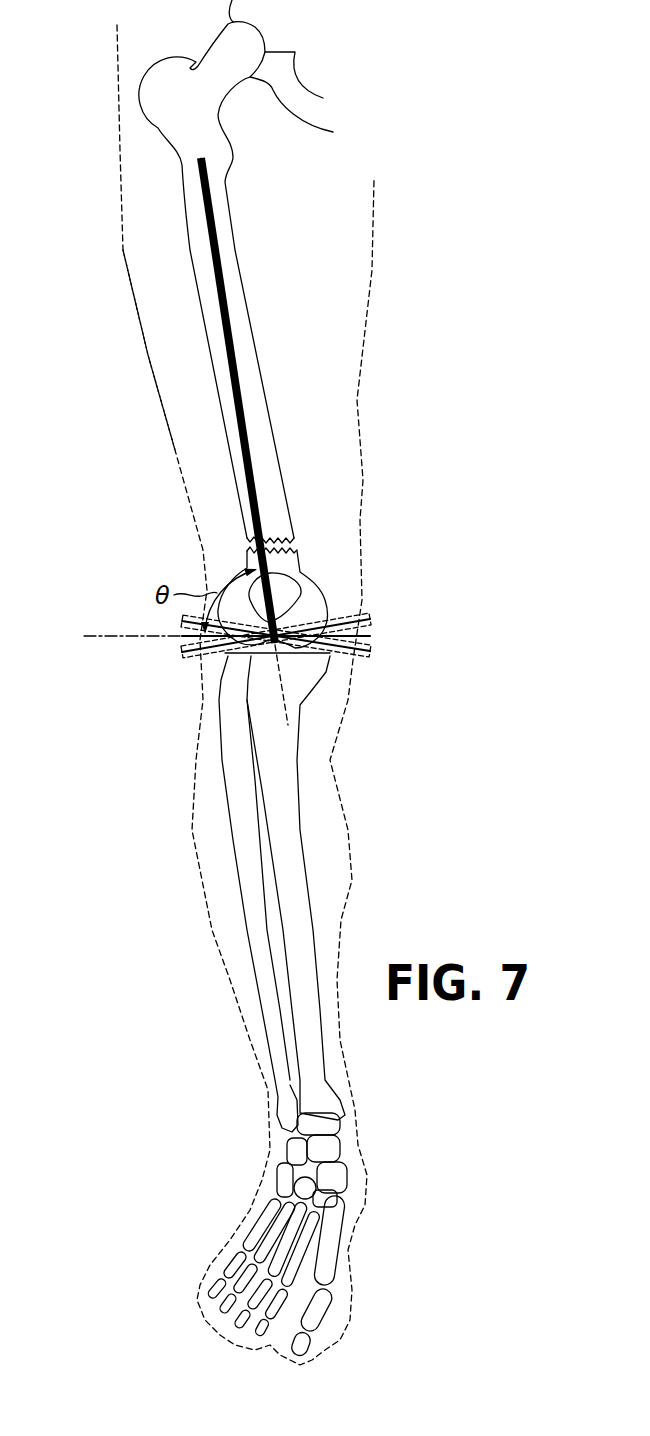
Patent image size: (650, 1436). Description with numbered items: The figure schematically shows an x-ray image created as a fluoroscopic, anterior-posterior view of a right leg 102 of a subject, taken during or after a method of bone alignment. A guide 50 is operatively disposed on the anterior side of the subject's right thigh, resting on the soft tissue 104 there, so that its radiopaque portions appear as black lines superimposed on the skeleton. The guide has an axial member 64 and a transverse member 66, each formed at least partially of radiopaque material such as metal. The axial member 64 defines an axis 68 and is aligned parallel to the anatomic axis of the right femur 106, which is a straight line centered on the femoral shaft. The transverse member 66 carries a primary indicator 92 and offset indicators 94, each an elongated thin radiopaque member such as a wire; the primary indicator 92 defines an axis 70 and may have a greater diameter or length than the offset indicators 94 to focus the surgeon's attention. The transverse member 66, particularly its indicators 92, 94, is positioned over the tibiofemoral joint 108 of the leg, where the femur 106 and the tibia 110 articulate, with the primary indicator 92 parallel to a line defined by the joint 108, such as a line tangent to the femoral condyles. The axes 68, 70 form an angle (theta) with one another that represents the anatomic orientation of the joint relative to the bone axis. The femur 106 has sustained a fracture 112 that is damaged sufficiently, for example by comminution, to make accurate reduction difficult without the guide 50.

The guide 50 is at (190, 350).
The axial member 64 is at (240, 377).
The transverse member 66 is at (343, 605).
The axis 68 is at (285, 688).
The axis 70 is at (113, 635).
The primary indicator 92 is at (355, 636).
The offset indicators 94 is at (355, 620).
The right leg 102 is at (110, 240).
The soft tissue 104 is at (147, 357).
The right femur 106 is at (247, 318).
The tibiofemoral joint 108 is at (252, 664).
The tibia 110 is at (312, 868).
The fracture 112 is at (307, 534).